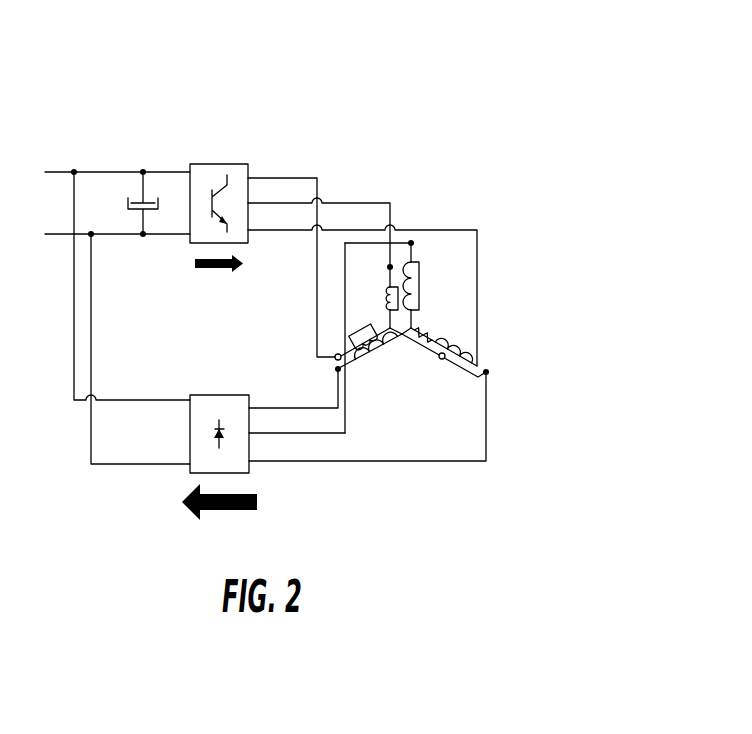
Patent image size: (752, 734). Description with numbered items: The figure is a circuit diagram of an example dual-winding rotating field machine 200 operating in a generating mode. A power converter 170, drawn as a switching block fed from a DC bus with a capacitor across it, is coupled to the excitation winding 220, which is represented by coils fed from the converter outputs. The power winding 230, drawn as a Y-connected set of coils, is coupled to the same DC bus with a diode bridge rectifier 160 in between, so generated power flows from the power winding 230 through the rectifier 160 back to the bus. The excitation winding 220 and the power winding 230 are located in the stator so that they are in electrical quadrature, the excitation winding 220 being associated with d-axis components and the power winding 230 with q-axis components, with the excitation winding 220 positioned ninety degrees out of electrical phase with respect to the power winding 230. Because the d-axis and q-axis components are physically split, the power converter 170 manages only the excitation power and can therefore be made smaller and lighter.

The dual-winding rotating field machine 200 is at (538, 126).
The power converter 170 is at (213, 164).
The excitation winding 220 is at (386, 200).
The power winding 230 is at (487, 430).
The diode bridge rectifier 160 is at (214, 395).